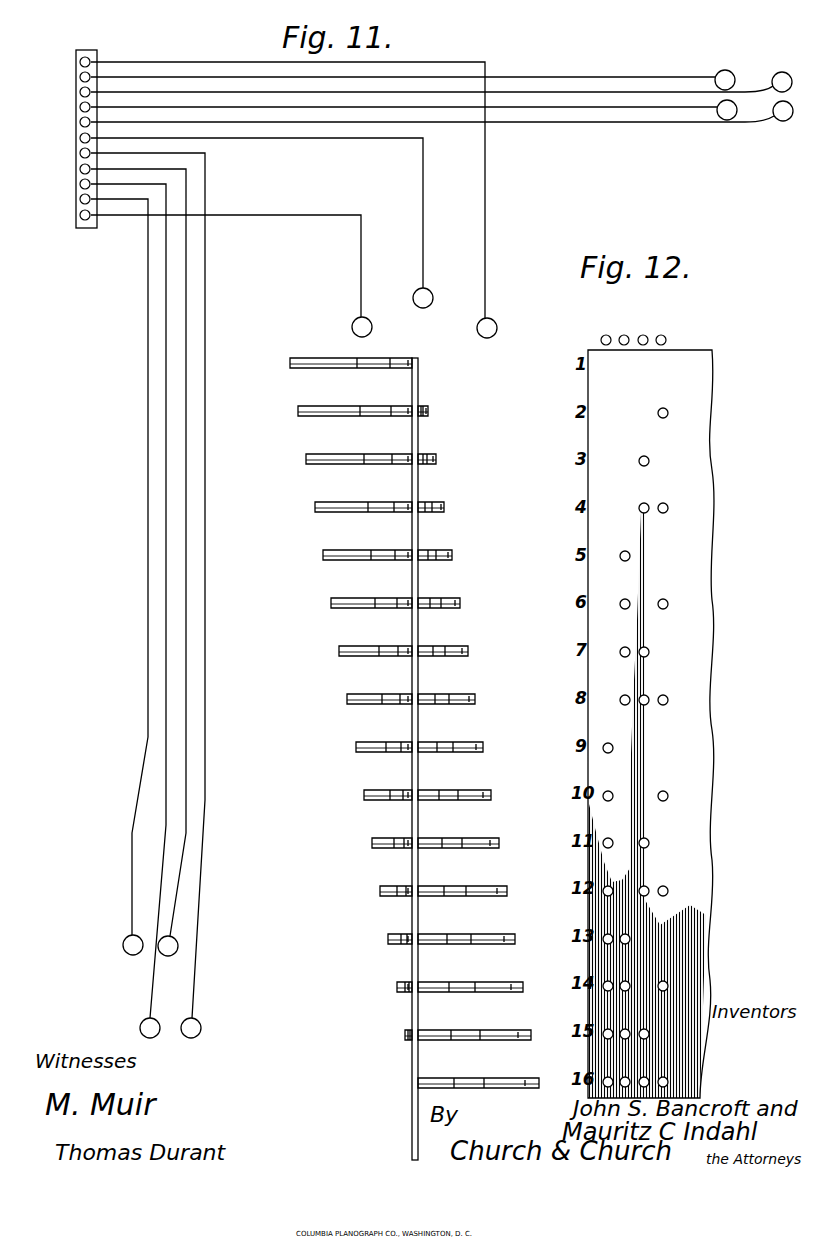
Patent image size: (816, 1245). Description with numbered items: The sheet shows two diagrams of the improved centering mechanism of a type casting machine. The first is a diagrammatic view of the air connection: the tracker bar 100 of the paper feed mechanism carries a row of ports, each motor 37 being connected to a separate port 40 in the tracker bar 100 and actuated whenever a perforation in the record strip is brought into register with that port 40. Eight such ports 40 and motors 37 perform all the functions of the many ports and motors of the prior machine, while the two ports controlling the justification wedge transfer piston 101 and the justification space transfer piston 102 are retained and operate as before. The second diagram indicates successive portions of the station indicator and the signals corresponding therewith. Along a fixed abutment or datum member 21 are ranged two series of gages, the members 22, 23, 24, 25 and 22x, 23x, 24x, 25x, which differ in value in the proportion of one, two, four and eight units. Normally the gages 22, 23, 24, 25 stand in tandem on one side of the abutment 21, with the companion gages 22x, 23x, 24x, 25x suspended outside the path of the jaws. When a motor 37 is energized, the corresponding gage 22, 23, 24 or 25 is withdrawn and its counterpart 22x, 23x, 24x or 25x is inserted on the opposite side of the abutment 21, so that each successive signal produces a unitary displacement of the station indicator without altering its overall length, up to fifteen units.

In FIG. 11, the fixed abutment 21 is at (411, 1125).
In FIG. 11, the one-unit gage 22 is at (398, 700).
In FIG. 11, the two-unit gage 23 is at (391, 699).
In FIG. 11, the four-unit gage 24 is at (378, 689).
In FIG. 11, the eight-unit gage 25 is at (351, 699).
In FIG. 11, the one-unit companion gage 22x is at (439, 737).
In FIG. 11, the two-unit companion gage 23x is at (453, 758).
In FIG. 11, the four-unit companion gage 24x is at (481, 747).
In FIG. 11, the eight-unit companion gage 25x is at (478, 758).
In FIG. 11, the motor 37 is at (778, 102).
In FIG. 11, the port 40 is at (79, 121).
In FIG. 12, the port 40 is at (658, 334).
In FIG. 11, the tracker bar 100 is at (79, 138).
In FIG. 11, the justification wedge transfer piston 101 is at (352, 328).
In FIG. 11, the justification space transfer piston 102 is at (425, 308).